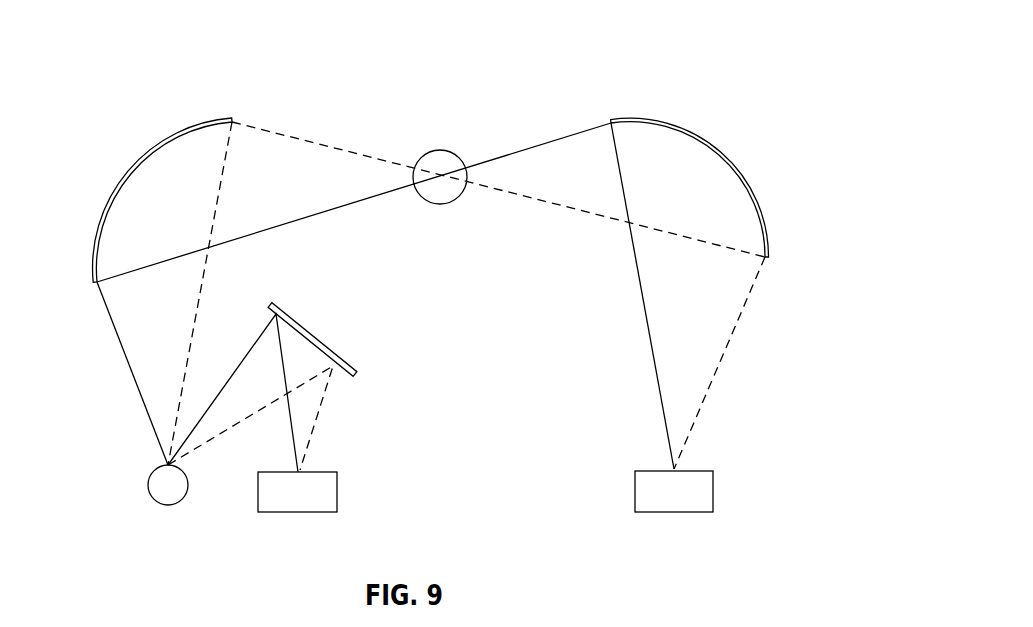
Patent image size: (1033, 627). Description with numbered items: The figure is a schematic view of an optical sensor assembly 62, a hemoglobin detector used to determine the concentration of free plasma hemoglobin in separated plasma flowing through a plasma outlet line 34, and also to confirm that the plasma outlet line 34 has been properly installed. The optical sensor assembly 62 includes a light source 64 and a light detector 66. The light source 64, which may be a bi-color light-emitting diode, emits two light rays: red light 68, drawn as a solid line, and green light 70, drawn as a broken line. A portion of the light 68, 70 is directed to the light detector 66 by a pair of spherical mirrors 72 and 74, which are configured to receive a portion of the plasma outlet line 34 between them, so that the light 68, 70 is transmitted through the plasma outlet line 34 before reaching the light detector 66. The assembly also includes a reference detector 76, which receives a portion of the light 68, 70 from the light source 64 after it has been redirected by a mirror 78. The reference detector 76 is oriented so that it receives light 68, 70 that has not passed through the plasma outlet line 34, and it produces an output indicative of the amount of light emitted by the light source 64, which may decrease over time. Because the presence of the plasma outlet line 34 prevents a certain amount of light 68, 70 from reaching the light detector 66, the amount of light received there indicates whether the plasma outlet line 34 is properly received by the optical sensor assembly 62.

The optical sensor assembly 62 is at (746, 76).
The spherical mirror 72 is at (145, 158).
The spherical mirror 74 is at (746, 183).
The plasma outlet line 34 is at (440, 150).
The light ray 70 is at (307, 143).
The light ray 68 is at (120, 343).
The mirror 78 is at (313, 340).
The light source 64 is at (168, 505).
The reference detector 76 is at (298, 512).
The light detector 66 is at (672, 512).